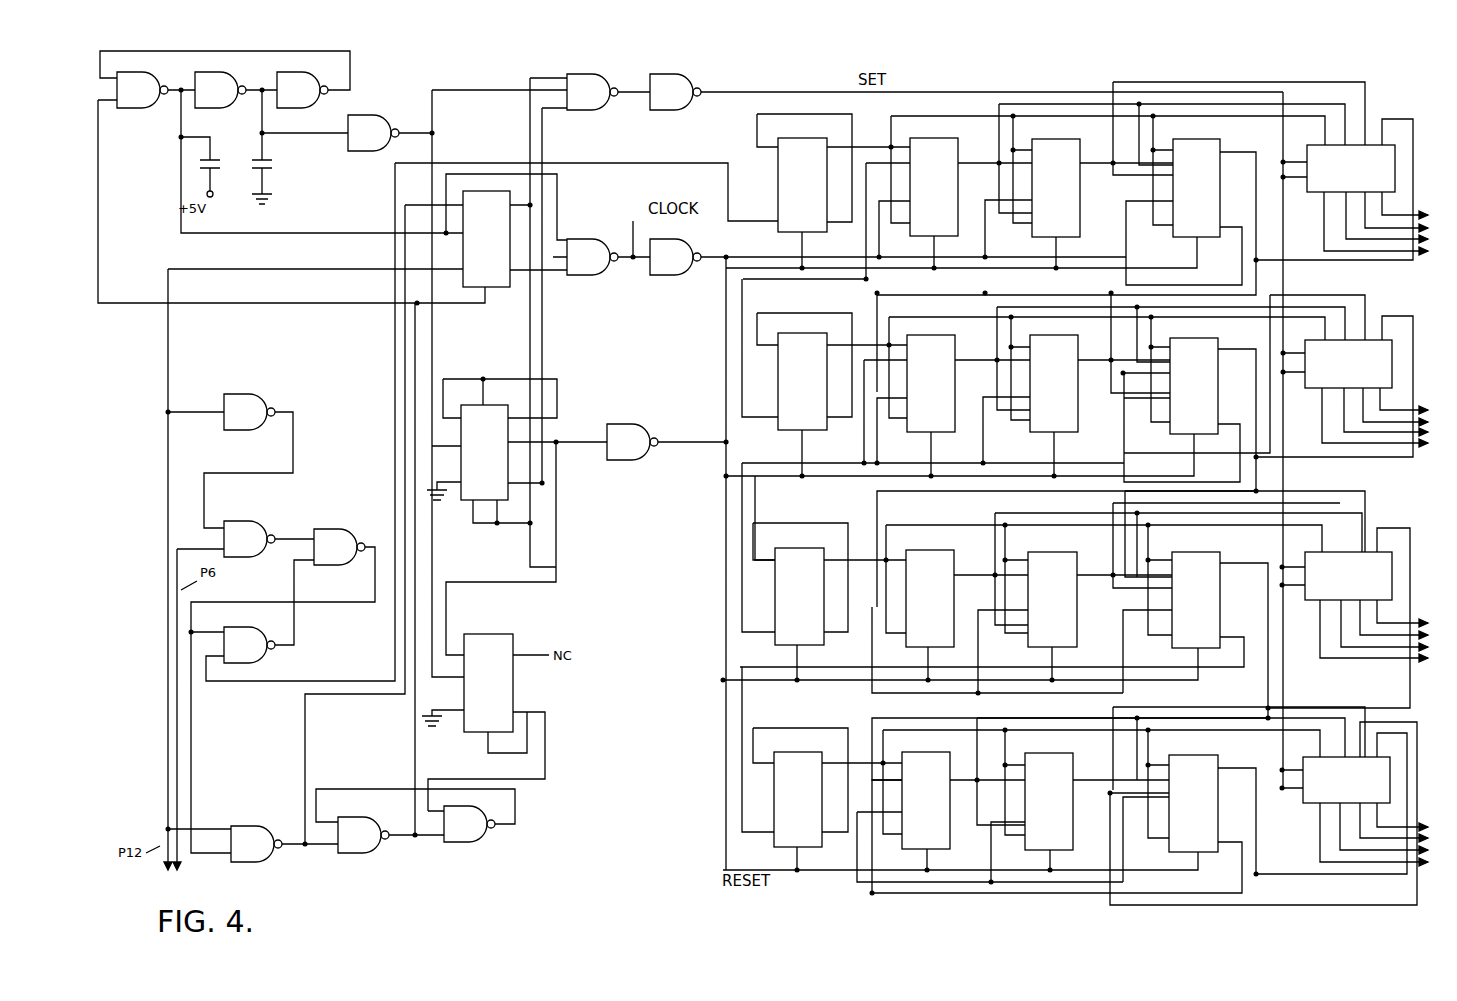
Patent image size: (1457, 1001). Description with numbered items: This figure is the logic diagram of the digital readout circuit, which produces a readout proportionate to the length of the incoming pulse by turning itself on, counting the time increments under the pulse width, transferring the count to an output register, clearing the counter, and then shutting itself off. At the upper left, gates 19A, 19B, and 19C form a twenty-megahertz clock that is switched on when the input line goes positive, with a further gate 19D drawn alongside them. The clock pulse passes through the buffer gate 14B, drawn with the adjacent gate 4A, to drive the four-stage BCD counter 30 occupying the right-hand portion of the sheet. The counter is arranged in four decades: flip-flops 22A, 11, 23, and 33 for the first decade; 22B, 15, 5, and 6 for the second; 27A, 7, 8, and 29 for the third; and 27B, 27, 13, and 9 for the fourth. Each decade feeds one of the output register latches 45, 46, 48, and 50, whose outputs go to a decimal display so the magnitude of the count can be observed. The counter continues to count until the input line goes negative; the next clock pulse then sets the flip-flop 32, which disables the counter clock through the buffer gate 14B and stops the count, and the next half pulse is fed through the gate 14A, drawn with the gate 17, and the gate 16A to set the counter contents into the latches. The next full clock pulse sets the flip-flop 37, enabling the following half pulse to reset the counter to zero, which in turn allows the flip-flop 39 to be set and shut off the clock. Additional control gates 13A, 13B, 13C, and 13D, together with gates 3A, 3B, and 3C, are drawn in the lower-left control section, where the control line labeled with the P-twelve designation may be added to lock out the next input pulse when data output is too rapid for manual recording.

The clock gate 19A is at (142, 90).
The clock gate 19B is at (220, 90).
The clock gate 19C is at (302, 90).
The gate 19D is at (373, 133).
The gate 14A is at (592, 92).
The buffer gate 14B is at (592, 257).
The gate 17 is at (675, 92).
The gate 4A is at (675, 257).
The gate 16A is at (632, 442).
The gate 13A is at (256, 844).
The gate 13B is at (363, 835).
The gate 13C is at (469, 824).
The gate 13D is at (249, 412).
The gate 3A is at (249, 645).
The gate 3B is at (249, 539).
The gate 3C is at (339, 547).
The flip-flop 32 is at (476, 247).
The flip-flop 37 is at (474, 460).
The flip-flop 39 is at (478, 691).
The four-stage BCD counter 30 is at (1102, 79).
The flip-flop 22A is at (788, 194).
The flip-flop 11 is at (926, 195).
The flip-flop 23 is at (1047, 196).
The flip-flop 33 is at (1187, 196).
The latch 45 is at (1341, 176).
The flip-flop 22B is at (788, 390).
The flip-flop 15 is at (923, 392).
The flip-flop 5 is at (1048, 392).
The flip-flop 6 is at (1188, 394).
The latch 46 is at (1338, 372).
The flip-flop 27A is at (785, 605).
The flip-flop 7 is at (924, 607).
The flip-flop 8 is at (1046, 608).
The flip-flop 29 is at (1187, 609).
The latch 48 is at (1338, 584).
The flip-flop 27B is at (784, 808).
The flip-flop 27 is at (917, 809).
The flip-flop 13 is at (1041, 810).
The flip-flop 9 is at (1187, 812).
The latch 50 is at (1336, 788).